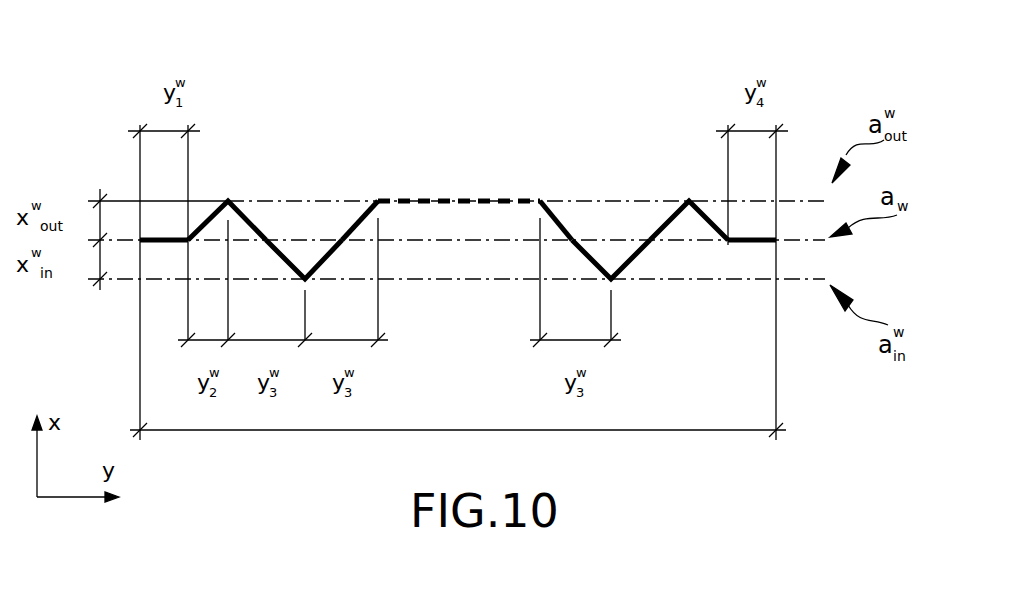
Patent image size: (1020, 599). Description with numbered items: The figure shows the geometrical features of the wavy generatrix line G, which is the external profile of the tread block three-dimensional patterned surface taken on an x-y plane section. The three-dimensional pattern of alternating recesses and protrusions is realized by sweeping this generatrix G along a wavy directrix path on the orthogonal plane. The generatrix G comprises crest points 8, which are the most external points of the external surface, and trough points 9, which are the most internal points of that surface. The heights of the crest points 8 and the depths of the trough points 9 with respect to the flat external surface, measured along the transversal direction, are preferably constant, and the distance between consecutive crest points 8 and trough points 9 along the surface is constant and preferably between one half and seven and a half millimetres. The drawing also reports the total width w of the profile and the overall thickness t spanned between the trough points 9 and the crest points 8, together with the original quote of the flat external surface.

The crest points 8 is at (228, 200).
The trough points 9 is at (305, 278).
The generatrix line G is at (85, 70).
The width w is at (458, 443).
The thickness t is at (89, 265).